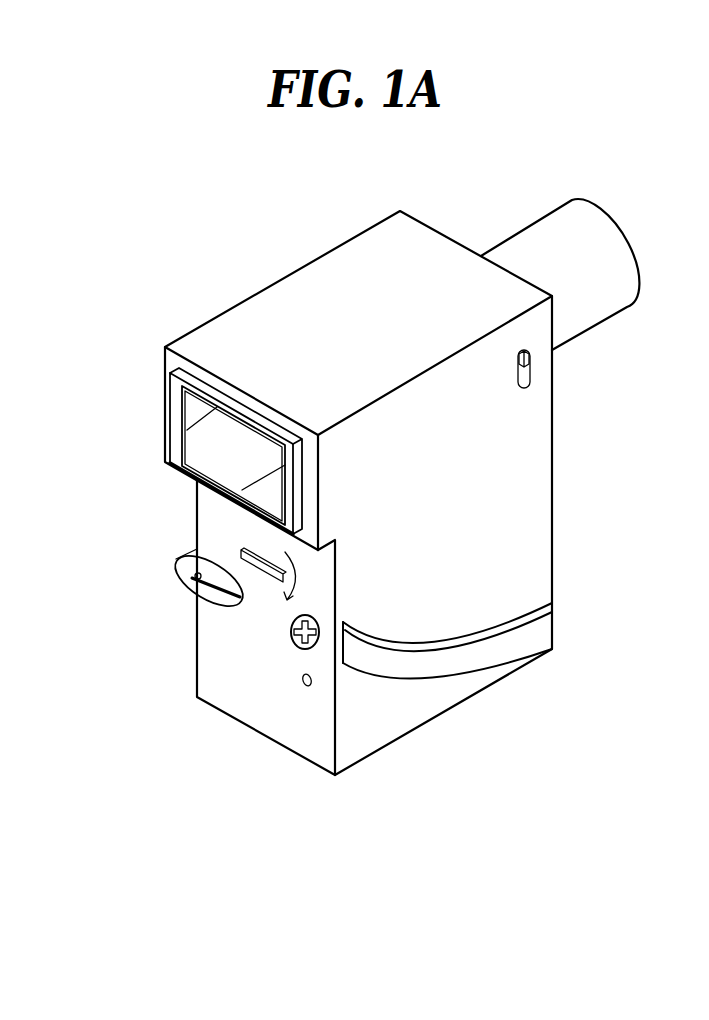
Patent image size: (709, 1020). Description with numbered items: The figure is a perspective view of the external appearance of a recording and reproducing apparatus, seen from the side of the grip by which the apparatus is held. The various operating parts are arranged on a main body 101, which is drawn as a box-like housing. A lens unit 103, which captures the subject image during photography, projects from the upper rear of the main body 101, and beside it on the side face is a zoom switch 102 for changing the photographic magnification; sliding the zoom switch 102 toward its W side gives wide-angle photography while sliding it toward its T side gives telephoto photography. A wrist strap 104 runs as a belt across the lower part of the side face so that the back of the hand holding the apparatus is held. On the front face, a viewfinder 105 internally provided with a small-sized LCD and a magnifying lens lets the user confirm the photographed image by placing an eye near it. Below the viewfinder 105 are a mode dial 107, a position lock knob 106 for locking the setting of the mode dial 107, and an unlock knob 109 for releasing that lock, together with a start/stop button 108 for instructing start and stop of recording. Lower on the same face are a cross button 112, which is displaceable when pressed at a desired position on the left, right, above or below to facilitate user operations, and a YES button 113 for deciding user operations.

The main body 101 is at (533, 492).
The zoom switch 102 is at (533, 388).
The lens unit 103 is at (532, 238).
The wrist strap 104 is at (505, 647).
The viewfinder 105 is at (205, 437).
The position lock knob 106 is at (241, 557).
The mode dial 107 is at (194, 577).
The start/stop button 108 is at (193, 573).
The unlock knob 109 is at (223, 587).
The cross button 112 is at (290, 636).
The YES button 113 is at (303, 690).